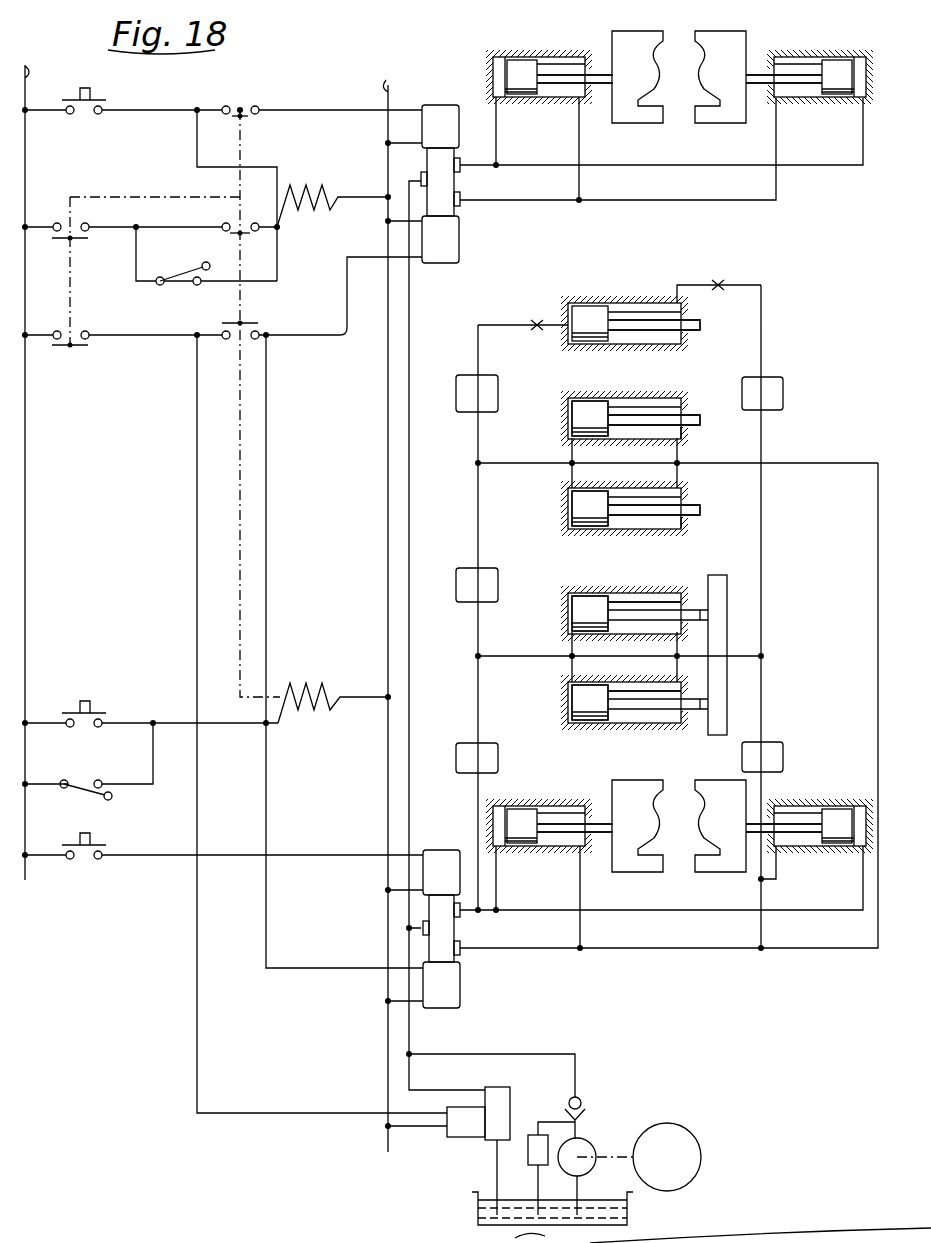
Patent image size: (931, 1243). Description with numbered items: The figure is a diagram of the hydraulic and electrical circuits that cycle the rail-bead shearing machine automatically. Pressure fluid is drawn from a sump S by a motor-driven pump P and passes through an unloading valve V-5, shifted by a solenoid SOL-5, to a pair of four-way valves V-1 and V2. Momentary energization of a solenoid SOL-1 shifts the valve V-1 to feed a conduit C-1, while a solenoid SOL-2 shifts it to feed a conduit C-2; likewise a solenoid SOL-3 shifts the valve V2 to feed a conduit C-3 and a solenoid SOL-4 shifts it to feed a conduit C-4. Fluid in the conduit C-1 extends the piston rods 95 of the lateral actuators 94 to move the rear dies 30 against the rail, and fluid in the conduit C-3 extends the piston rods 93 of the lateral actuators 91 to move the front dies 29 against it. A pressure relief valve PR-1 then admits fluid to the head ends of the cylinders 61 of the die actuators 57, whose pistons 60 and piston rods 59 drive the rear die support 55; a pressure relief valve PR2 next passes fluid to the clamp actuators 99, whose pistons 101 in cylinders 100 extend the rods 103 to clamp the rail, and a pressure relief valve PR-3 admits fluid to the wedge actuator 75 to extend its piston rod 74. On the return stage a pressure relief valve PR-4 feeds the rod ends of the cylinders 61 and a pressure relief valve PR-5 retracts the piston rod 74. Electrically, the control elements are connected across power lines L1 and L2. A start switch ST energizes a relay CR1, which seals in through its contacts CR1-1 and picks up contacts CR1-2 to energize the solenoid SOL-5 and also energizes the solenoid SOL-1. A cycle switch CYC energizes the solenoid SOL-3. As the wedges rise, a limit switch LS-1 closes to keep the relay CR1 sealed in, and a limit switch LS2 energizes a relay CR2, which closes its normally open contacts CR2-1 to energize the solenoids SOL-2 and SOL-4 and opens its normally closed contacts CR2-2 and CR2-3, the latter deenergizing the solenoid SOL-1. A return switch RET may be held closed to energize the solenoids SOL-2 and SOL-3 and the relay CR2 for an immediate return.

The lateral actuators 94 is at (567, 57).
The piston rods 95 is at (566, 86).
The rear die 30 is at (693, 118).
The wedge actuator 75 is at (637, 300).
The piston rod 74 is at (698, 340).
The clamp actuators 99 is at (628, 400).
The pistons 101 is at (600, 408).
The rods 103 is at (692, 420).
The cylinders 100 is at (684, 432).
The die actuators 57 is at (640, 592).
The pistons 60 is at (584, 598).
The cylinders 61 is at (617, 598).
The piston rods 59 is at (707, 617).
The rear die support 55 is at (727, 575).
The lateral actuators 91 is at (552, 806).
The piston rods 93 is at (588, 826).
The front die 29 is at (692, 865).
The electrical power line L1 is at (27, 459).
The electrical power line L2 is at (375, 605).
The start switch ST is at (100, 102).
The normally closed contacts CR2-3 is at (242, 106).
The contacts CR1-1 is at (62, 218).
The normally closed contacts CR2-2 is at (230, 222).
The limit switch LS-1 is at (180, 270).
The relay CR1 is at (322, 185).
The contacts CR1-2 is at (80, 345).
The normally open contacts CR2-1 is at (268, 330).
The relay CR2 is at (305, 683).
The return switch RET is at (108, 715).
The limit switch LS2 is at (85, 780).
The cycle switch CYC is at (104, 848).
The solenoid SOL-1 is at (431, 110).
The four-way valve V-1 is at (463, 186).
The solenoid SOL-2 is at (462, 238).
The conduit C-1 is at (712, 167).
The conduit C-2 is at (712, 207).
The pressure relief valve PR-3 is at (468, 378).
The pressure relief valve PR-5 is at (780, 378).
The pressure relief valve PR2 is at (470, 568).
The pressure relief valve PR-1 is at (468, 743).
The pressure relief valve PR-4 is at (782, 745).
The solenoid SOL-3 is at (442, 852).
The four-way valve V2 is at (461, 938).
The solenoid SOL-4 is at (462, 978).
The conduit C-3 is at (672, 912).
The conduit C-4 is at (750, 948).
The unloading valve V-5 is at (512, 1097).
The solenoid SOL-5 is at (465, 1130).
The pump P is at (598, 1140).
The sump S is at (478, 1212).